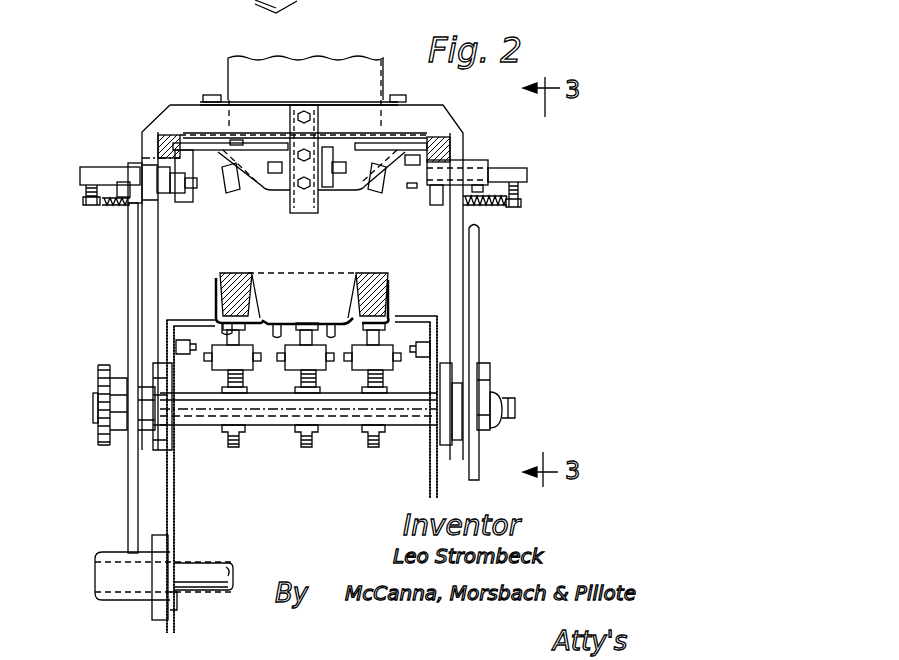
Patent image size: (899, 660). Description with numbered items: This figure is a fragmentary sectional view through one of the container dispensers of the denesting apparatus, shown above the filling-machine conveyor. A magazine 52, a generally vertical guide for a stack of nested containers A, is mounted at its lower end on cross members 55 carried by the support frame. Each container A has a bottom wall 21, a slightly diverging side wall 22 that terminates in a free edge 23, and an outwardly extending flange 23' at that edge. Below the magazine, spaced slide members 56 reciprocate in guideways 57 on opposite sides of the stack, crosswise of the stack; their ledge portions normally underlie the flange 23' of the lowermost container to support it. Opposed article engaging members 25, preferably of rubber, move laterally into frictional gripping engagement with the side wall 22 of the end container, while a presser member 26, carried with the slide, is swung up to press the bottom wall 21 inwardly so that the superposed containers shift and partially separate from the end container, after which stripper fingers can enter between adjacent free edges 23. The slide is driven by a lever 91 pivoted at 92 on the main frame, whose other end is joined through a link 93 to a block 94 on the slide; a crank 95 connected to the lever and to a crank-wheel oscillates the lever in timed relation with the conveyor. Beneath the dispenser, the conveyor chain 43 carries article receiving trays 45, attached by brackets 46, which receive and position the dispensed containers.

The bottom wall 21 is at (275, 321).
The side wall 22 is at (262, 300).
The free edge 23 is at (303, 253).
The flange 23' is at (246, 275).
The article engaging members 25 is at (226, 196).
The presser member 26 is at (318, 207).
The chain 43 is at (380, 322).
The article receiving trays 45 is at (380, 283).
The brackets 46 is at (390, 304).
The magazine 52 is at (243, 74).
The cross members 55 is at (173, 118).
The slide members 56 is at (413, 147).
The guideways 57 is at (440, 152).
The lever 91 is at (128, 262).
The pivot 92 is at (100, 568).
The link 93 is at (180, 198).
The block 94 is at (203, 195).
The crank 95 is at (500, 393).
The containers A is at (343, 270).